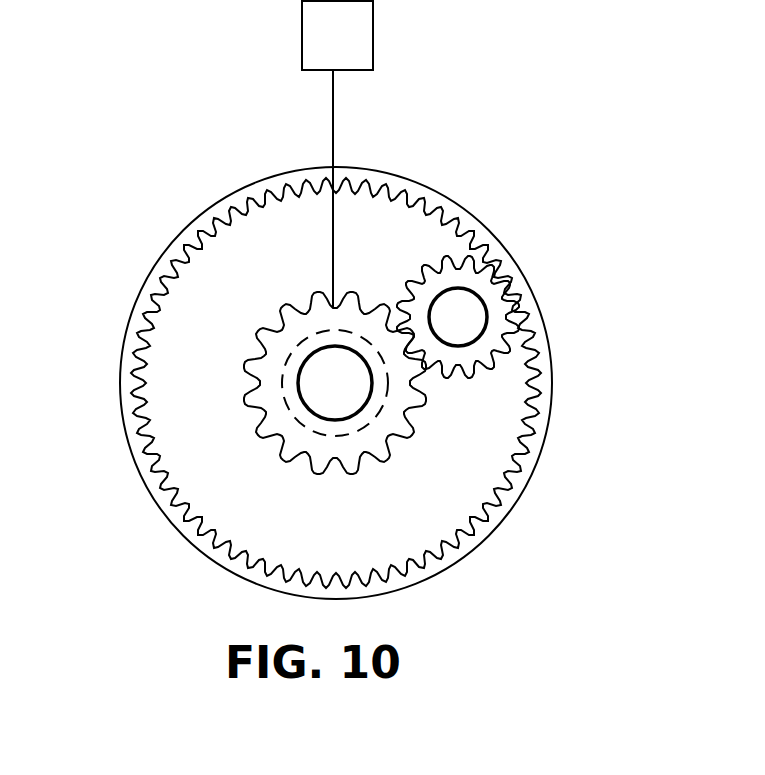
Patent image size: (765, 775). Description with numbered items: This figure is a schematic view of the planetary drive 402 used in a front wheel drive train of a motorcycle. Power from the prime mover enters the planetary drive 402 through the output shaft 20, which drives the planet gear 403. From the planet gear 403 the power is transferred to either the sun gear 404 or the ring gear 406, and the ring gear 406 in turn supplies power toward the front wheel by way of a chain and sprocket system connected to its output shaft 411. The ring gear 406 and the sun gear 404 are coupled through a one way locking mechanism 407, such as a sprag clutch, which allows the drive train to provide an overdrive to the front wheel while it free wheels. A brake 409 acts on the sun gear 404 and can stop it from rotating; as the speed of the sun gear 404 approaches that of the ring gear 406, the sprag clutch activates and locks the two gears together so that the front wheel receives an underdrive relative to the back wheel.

The planetary drive 402 is at (562, 472).
The planet gear 403 is at (493, 358).
The sun gear 404 is at (260, 393).
The ring gear 406 is at (193, 221).
The one way locking mechanism 407 is at (378, 411).
The brake 409 is at (302, 35).
The output shaft 411 is at (335, 383).
The output shaft 20 is at (458, 317).